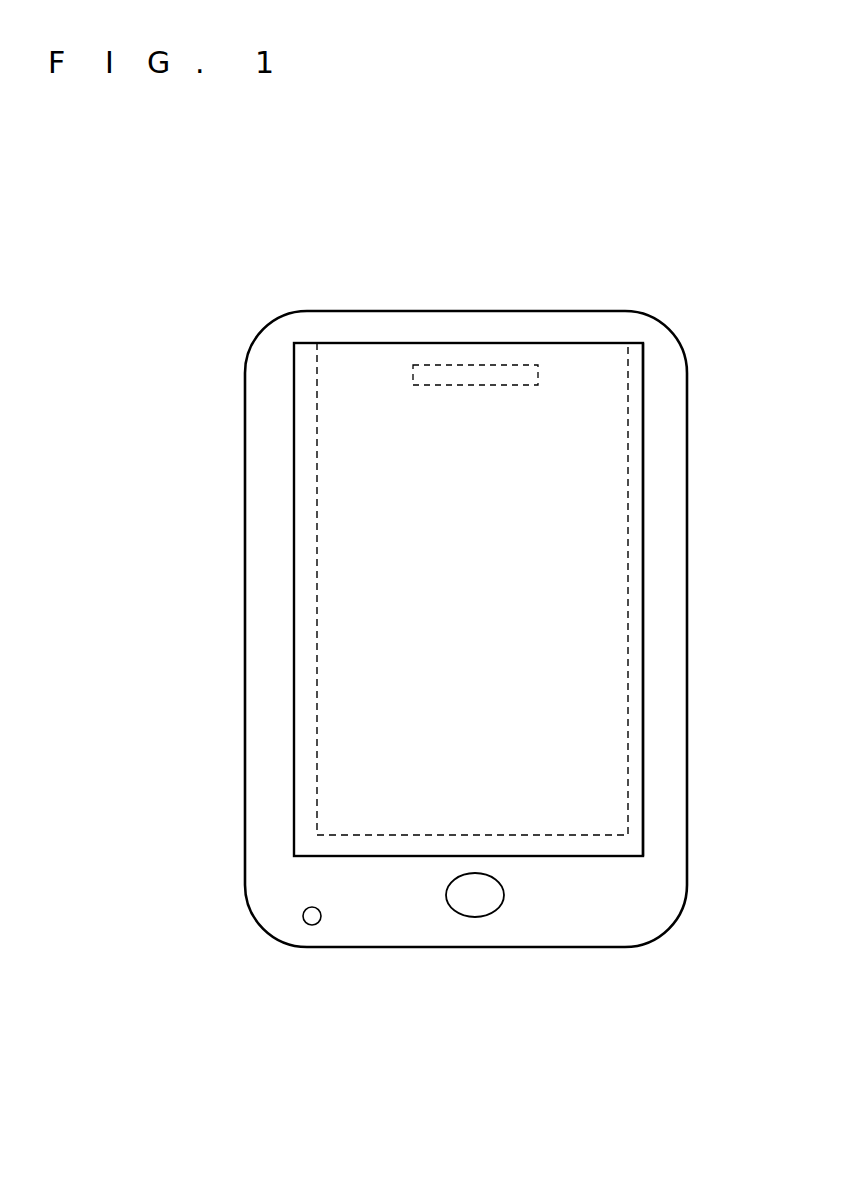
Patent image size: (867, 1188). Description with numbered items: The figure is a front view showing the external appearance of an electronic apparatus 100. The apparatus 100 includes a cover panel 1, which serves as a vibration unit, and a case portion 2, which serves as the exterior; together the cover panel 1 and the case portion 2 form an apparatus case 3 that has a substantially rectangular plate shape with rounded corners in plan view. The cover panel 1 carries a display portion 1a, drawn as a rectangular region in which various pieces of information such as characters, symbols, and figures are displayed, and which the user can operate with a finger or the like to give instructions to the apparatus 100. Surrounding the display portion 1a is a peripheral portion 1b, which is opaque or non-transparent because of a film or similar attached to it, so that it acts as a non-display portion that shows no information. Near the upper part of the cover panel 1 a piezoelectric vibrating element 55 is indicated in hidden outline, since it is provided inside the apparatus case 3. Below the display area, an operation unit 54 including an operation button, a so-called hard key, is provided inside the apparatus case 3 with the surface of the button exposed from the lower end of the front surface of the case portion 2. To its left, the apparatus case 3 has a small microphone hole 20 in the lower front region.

The electronic apparatus 100 is at (633, 278).
The apparatus case 3 is at (322, 250).
The case portion 2 is at (270, 370).
The cover panel 1 is at (304, 373).
The display portion 1a is at (628, 677).
The peripheral portion 1b is at (637, 591).
The piezoelectric vibrating element 55 is at (467, 376).
The microphone hole 20 is at (313, 925).
The operation unit 54 is at (474, 903).